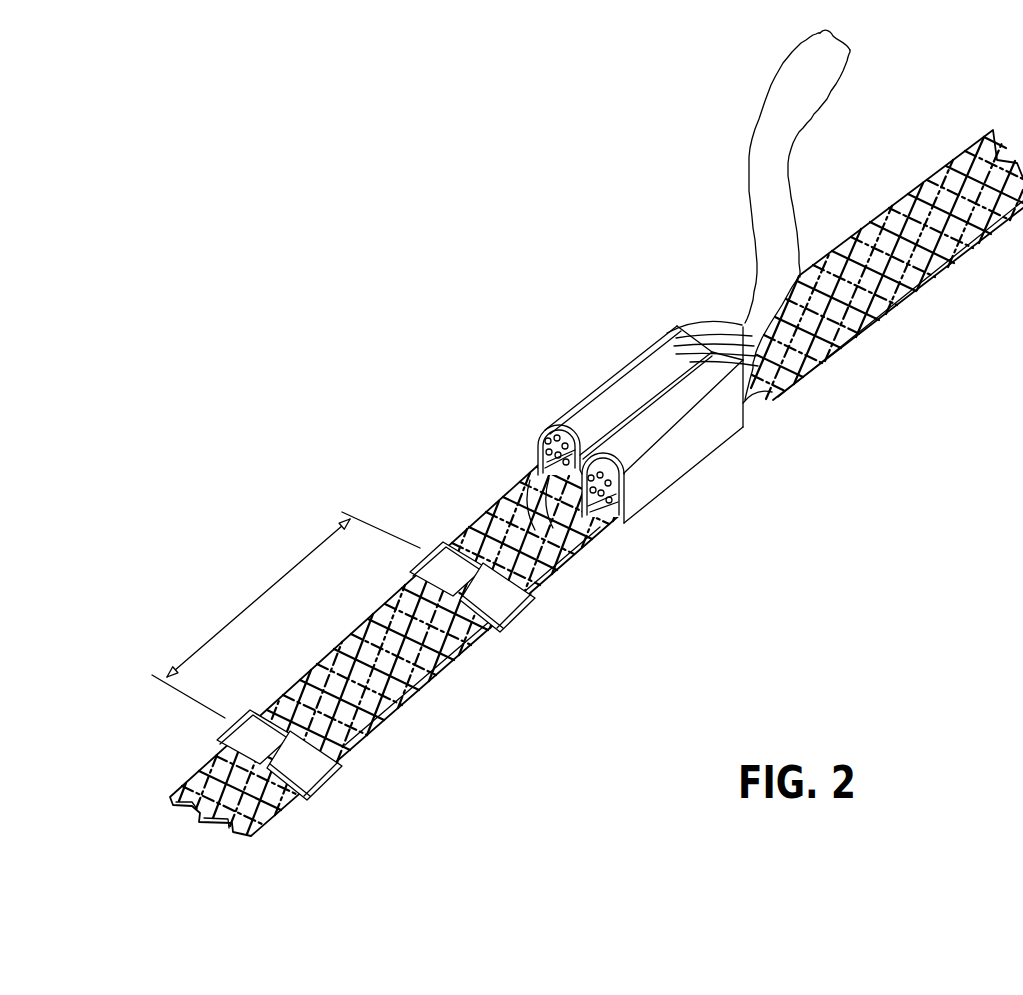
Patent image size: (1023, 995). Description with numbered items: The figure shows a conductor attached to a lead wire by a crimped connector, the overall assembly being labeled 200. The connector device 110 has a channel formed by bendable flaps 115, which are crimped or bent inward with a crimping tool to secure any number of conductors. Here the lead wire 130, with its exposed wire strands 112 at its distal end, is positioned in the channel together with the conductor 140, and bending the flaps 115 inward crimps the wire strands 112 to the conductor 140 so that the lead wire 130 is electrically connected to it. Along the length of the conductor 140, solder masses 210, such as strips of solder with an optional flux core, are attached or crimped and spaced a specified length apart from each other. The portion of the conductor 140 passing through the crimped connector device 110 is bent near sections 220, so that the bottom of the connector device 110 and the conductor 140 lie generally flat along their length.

The connector device 110 is at (707, 496).
The wire strands 112 is at (546, 428).
The bendable flaps 115 is at (636, 378).
The lead wire 130 is at (807, 88).
The conductor 140 is at (393, 680).
The cable assembly 200 is at (358, 377).
The solder masses 210 is at (522, 613).
The sections 220 is at (760, 413).